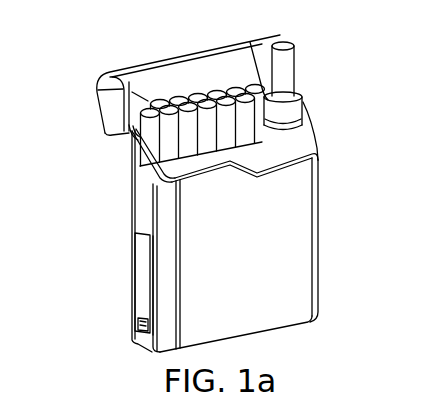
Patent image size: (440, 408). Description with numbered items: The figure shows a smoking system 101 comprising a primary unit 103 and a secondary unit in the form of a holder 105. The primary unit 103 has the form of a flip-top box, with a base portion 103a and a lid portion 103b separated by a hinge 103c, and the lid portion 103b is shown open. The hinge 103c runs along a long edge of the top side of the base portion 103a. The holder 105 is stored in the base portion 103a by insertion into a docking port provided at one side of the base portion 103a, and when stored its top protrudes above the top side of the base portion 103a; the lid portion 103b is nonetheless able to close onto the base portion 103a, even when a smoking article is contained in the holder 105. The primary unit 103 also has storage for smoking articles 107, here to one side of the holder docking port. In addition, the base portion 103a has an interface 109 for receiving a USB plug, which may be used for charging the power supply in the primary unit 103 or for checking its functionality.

The smoking system 101 is at (92, 50).
The primary unit 103 is at (190, 203).
The base portion 103a is at (298, 250).
The lid portion 103b is at (202, 70).
The hinge 103c is at (130, 134).
The holder 105 is at (301, 116).
The smoking articles 107 is at (205, 128).
The interface 109 is at (133, 330).